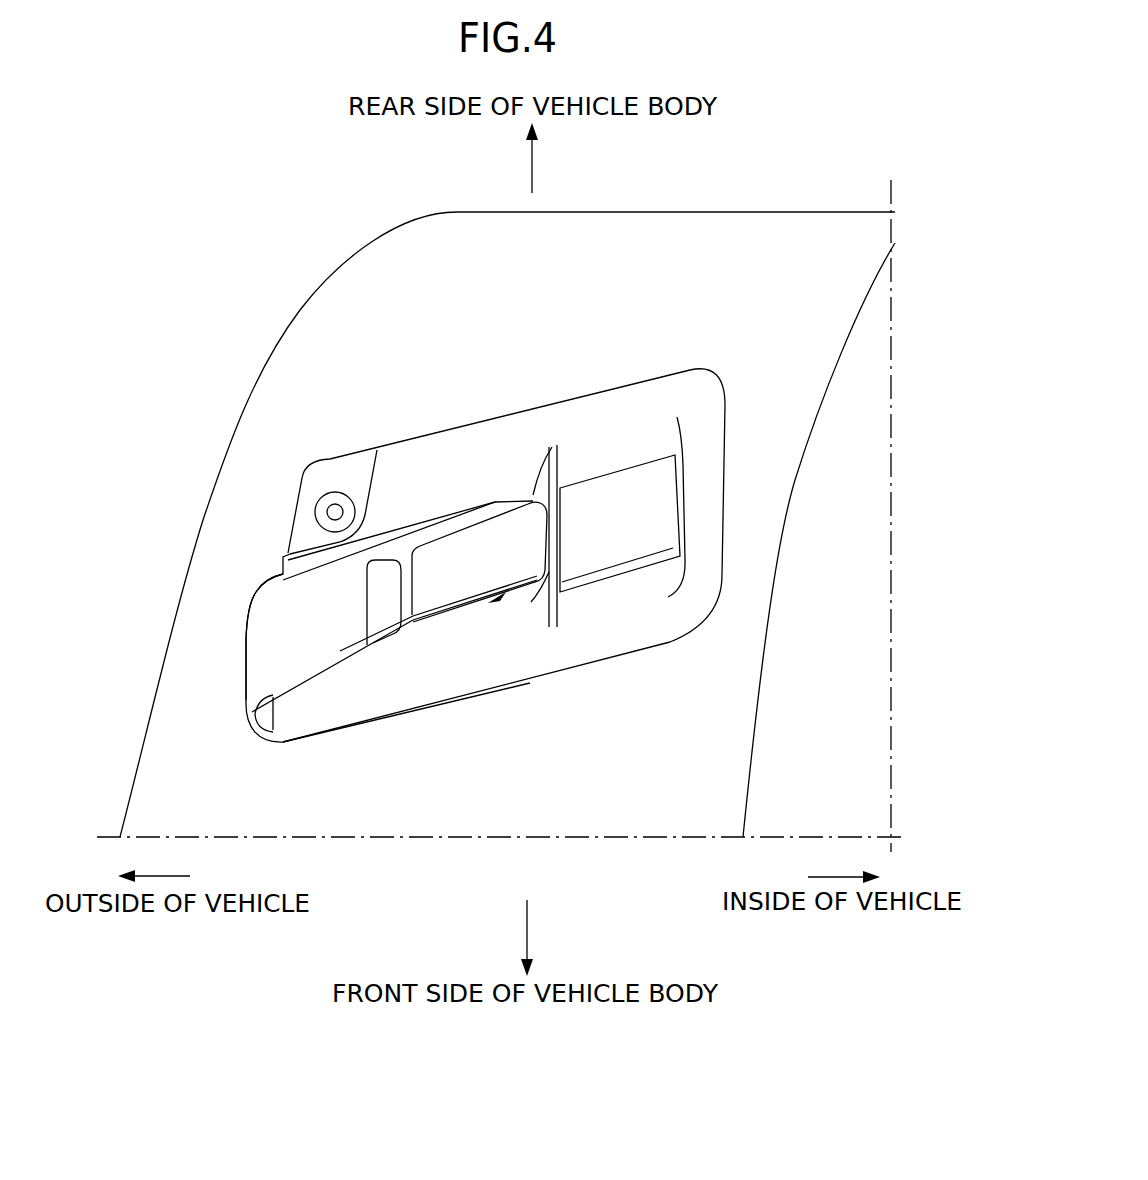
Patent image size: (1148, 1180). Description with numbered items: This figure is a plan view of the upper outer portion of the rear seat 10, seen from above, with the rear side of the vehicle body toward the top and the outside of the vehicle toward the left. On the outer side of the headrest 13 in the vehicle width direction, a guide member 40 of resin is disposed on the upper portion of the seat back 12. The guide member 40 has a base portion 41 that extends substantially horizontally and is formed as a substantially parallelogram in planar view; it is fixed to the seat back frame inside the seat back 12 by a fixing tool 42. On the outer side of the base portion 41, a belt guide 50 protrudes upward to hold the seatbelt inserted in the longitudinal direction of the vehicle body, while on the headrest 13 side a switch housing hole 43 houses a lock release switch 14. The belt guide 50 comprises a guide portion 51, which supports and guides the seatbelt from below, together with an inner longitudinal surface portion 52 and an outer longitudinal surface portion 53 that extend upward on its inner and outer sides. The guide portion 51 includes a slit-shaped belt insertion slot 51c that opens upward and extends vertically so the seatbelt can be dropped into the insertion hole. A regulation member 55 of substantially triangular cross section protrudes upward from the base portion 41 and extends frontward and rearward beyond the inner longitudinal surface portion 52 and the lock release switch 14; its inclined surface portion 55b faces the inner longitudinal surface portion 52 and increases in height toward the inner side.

The rear seat 10 is at (686, 202).
The seat back 12 is at (249, 397).
The headrest 13 is at (866, 352).
The lock release switch 14 is at (613, 545).
The guide member 40 is at (390, 728).
The base portion 41 is at (432, 690).
The fixing tool 42 is at (315, 512).
The switch housing hole 43 is at (665, 452).
The belt guide 50 is at (236, 662).
The guide portion 51 is at (457, 618).
The belt insertion slot 51c is at (403, 597).
The inner longitudinal surface portion 52 is at (518, 500).
The outer longitudinal surface portion 53 is at (247, 602).
The regulation member 55 is at (545, 487).
The inclined surface portion 55b is at (535, 597).